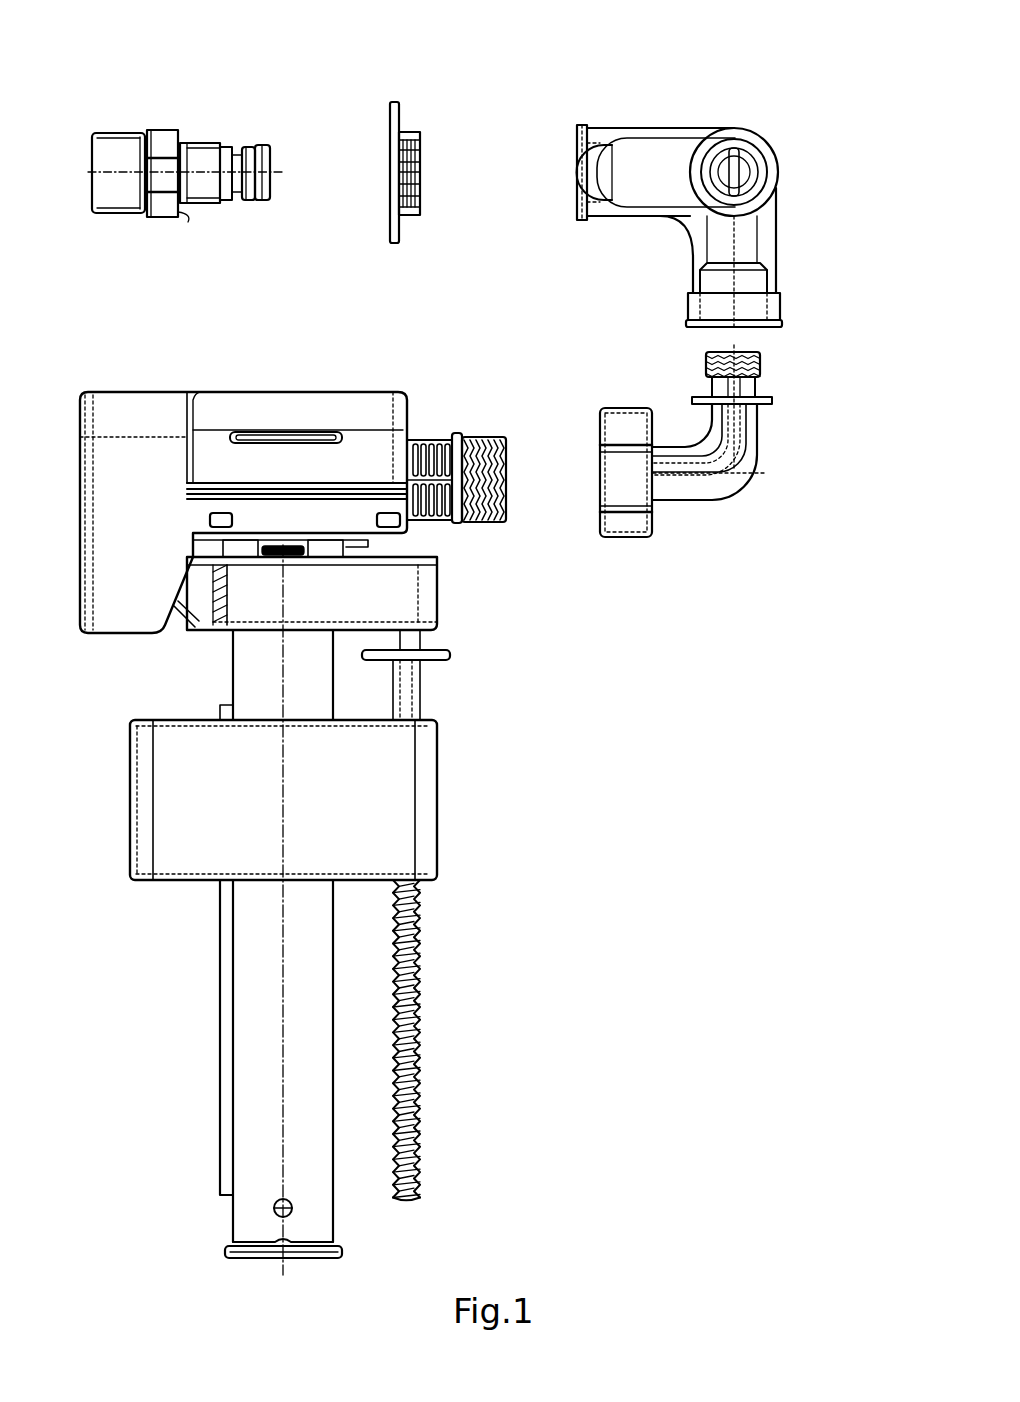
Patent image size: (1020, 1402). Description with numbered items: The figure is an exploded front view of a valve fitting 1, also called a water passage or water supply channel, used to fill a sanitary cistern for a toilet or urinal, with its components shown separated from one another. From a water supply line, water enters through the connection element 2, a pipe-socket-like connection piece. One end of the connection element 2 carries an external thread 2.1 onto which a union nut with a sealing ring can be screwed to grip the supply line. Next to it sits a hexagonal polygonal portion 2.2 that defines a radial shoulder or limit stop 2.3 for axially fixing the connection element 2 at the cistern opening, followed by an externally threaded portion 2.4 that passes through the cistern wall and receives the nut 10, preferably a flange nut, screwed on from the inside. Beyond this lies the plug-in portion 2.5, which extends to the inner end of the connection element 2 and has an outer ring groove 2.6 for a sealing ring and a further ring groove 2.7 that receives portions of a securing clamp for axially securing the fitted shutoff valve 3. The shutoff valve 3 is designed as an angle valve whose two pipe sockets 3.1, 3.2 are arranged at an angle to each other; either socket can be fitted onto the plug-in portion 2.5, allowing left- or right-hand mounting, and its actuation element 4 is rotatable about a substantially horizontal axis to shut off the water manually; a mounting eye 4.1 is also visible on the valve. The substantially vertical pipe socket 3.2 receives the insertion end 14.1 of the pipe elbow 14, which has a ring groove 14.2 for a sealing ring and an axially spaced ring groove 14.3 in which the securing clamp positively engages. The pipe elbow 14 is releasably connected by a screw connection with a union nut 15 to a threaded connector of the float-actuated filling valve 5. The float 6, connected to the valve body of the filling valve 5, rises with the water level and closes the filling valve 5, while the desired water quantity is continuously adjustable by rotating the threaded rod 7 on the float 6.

The valve fitting 1 is at (509, 58).
The connection element 2 is at (184, 167).
The external thread 2.1 is at (113, 212).
The polygonal portion 2.2 is at (165, 142).
The shoulder or limit stop 2.3 is at (188, 222).
The externally threaded portion 2.4 is at (204, 143).
The plug-in portion 2.5 is at (247, 155).
The ring groove 2.6 is at (257, 198).
The ring groove 2.7 is at (236, 197).
The shutoff valve 3 is at (709, 197).
The pipe socket 3.1 is at (624, 130).
The pipe socket 3.2 is at (773, 281).
The actuation element 4 is at (672, 175).
The lever arm eye 4.1 is at (602, 175).
The float-actuated filling valve 5 is at (237, 410).
The float 6 is at (395, 810).
The threaded rod 7 is at (415, 1005).
The nut 10 is at (410, 132).
The pipe elbow 14 is at (732, 430).
The insertion end 14.1 is at (716, 373).
The ring groove 14.2 is at (762, 363).
The ring groove 14.3 is at (747, 388).
The union nut 15 is at (627, 478).